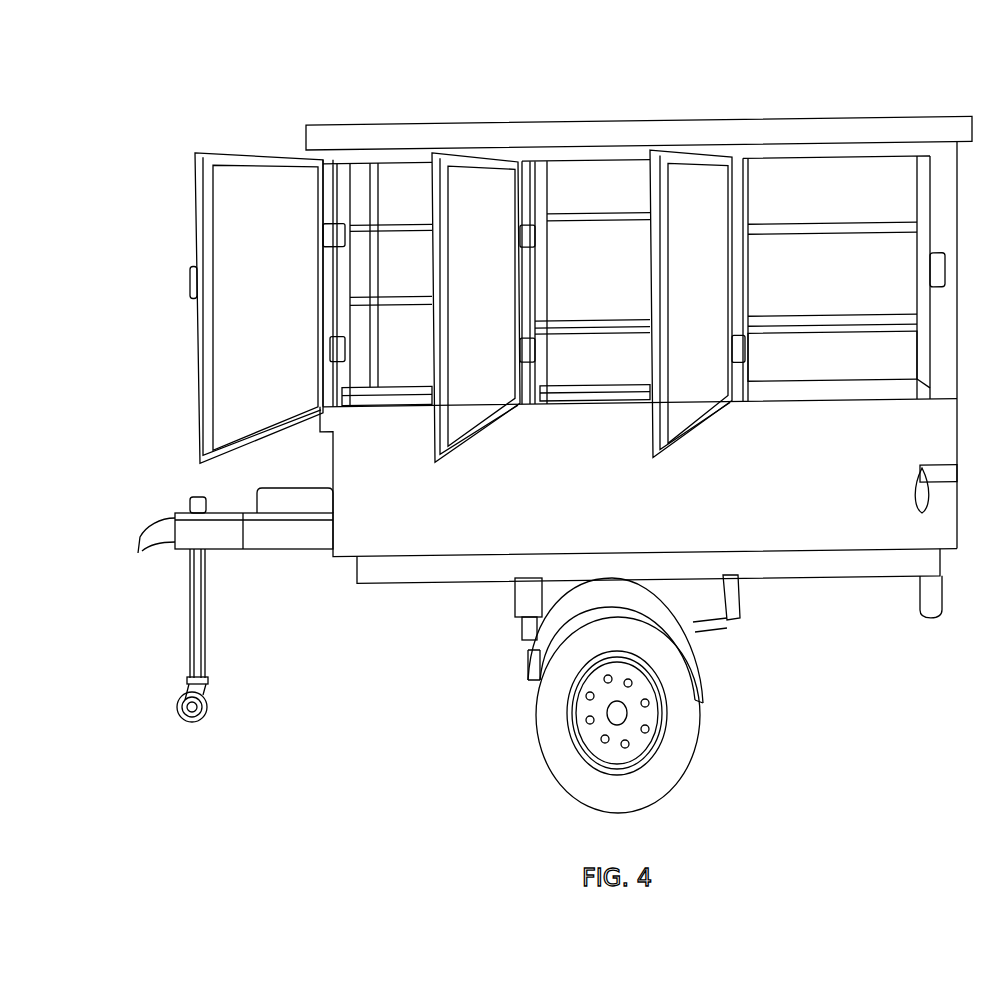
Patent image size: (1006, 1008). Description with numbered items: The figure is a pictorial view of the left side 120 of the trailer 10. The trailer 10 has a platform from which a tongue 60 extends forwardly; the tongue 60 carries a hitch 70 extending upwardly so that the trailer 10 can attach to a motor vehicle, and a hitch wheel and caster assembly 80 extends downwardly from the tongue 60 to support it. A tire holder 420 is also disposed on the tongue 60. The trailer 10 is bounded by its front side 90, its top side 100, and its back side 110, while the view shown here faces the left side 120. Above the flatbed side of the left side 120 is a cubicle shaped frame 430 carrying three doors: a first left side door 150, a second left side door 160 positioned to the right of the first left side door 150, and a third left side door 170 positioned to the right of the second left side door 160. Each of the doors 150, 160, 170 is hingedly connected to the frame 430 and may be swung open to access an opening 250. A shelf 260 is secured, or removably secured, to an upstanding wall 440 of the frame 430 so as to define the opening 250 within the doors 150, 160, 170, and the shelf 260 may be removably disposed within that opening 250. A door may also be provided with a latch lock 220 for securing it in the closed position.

The trailer 10 is at (153, 120).
The tongue 60 is at (269, 532).
The hitch 70 is at (191, 501).
The hitch wheel and caster assembly 80 is at (184, 697).
The front side 90 is at (284, 153).
The top side 100 is at (659, 116).
The back side 110 is at (967, 168).
The left side 120 is at (805, 438).
The first left side door 150 is at (243, 284).
The second left side door 160 is at (469, 287).
The third left side door 170 is at (683, 291).
The latch lock 220 is at (927, 468).
The opening 250 is at (396, 206).
The shelf 260 is at (387, 297).
The tire holder 420 is at (301, 500).
The cubicle shaped frame 430 is at (921, 362).
The upstanding wall 440 is at (370, 380).